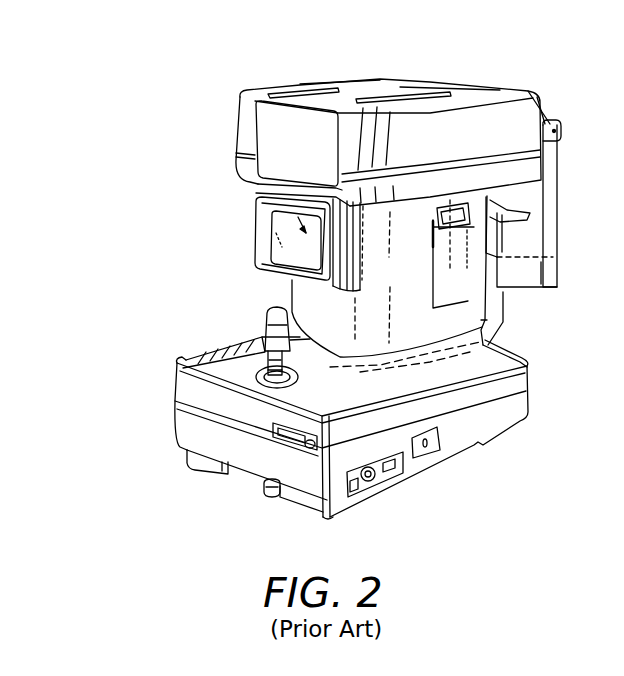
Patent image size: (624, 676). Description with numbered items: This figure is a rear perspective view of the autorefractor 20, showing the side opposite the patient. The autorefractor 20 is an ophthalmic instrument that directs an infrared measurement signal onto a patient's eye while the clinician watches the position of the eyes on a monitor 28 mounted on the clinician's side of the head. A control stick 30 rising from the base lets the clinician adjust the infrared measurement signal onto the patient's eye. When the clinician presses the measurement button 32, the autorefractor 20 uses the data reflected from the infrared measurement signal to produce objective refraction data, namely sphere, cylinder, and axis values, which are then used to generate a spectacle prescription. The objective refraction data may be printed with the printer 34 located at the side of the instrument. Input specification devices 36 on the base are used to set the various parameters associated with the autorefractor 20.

The autorefractor 20 is at (188, 50).
The display window 28 is at (285, 225).
The control stick 30 is at (262, 315).
The measurement button 32 is at (276, 310).
The printer 34 is at (470, 265).
The input specification devices 36 is at (203, 347).